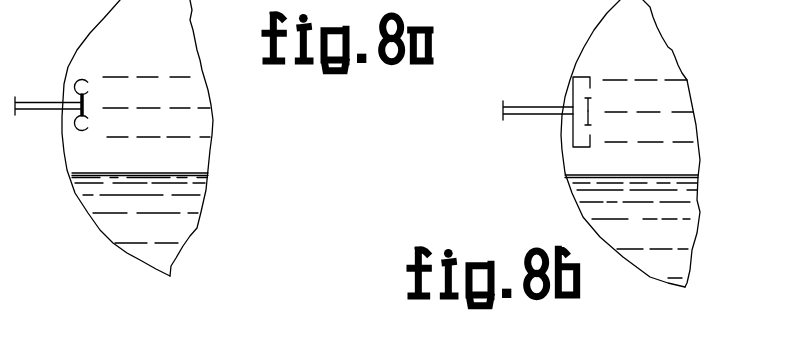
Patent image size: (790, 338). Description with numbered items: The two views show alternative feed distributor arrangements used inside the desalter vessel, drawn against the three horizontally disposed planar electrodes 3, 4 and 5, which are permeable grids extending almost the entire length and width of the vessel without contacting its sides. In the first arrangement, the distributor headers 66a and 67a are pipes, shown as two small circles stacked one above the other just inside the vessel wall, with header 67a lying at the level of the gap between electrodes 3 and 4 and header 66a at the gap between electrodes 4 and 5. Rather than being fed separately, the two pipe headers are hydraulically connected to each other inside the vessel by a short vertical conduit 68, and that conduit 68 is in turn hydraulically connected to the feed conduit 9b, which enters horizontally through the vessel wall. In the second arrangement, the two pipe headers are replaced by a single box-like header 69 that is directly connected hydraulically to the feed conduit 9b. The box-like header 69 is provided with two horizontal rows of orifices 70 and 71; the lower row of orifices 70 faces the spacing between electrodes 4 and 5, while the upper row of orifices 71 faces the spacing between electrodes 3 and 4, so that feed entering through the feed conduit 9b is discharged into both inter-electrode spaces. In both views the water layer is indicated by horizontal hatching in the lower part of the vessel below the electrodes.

In FIG. 8A, the planar electrode 3 is at (175, 77).
In FIG. 8B, the planar electrode 3 is at (669, 79).
In FIG. 8A, the planar electrode 4 is at (200, 108).
In FIG. 8B, the planar electrode 4 is at (678, 110).
In FIG. 8A, the planar electrode 5 is at (208, 135).
In FIG. 8B, the planar electrode 5 is at (687, 142).
In FIG. 8A, the feed conduit 9b is at (42, 102).
In FIG. 8B, the feed conduit 9b is at (532, 116).
In FIG. 8A, the distributor header 66a is at (88, 128).
In FIG. 8A, the distributor header 67a is at (83, 80).
In FIG. 8A, the conduit 68 is at (85, 107).
In FIG. 8B, the box-like header 69 is at (573, 78).
In FIG. 8B, the orifices 70 is at (591, 126).
In FIG. 8B, the orifices 71 is at (591, 97).